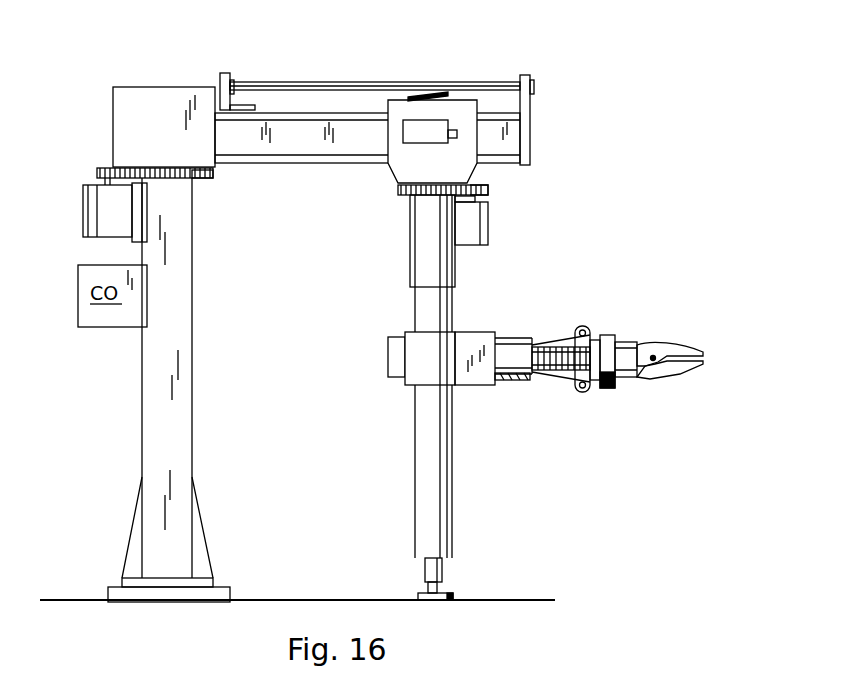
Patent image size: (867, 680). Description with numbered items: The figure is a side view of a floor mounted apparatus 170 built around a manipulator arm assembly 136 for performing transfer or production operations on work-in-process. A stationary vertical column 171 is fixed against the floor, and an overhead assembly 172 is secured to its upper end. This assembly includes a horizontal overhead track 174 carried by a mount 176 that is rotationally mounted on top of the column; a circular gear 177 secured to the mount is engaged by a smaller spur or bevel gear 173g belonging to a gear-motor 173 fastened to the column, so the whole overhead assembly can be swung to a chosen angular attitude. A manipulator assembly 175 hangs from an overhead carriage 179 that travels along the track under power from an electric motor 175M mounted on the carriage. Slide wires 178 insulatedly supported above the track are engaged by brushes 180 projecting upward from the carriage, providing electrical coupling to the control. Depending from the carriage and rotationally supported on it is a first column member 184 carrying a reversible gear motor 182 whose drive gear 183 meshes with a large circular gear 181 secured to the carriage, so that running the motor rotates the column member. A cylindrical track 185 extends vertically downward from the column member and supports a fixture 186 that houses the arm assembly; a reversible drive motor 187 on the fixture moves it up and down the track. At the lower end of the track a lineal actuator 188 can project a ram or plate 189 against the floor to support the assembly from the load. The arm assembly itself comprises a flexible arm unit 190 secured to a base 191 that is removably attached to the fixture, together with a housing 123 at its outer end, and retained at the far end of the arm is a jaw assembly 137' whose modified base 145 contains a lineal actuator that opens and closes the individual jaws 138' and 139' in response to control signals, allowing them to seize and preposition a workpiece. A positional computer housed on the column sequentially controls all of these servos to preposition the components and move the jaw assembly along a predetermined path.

The floor mounted apparatus 170 is at (548, 92).
The stationary vertical column 171 is at (180, 300).
The overhead assembly 172 is at (287, 83).
The gear-motor 173 is at (100, 208).
The spur or bevel gear 173g is at (97, 173).
The overhead track 174 is at (317, 167).
The manipulator assembly 175 is at (562, 213).
The electric motor 175M is at (447, 120).
The mount 176 is at (164, 127).
The circular gear 177 is at (197, 178).
The slide wires 178 is at (345, 83).
The overhead carriage 179 is at (402, 163).
The brushes 180 is at (427, 95).
The large circular spur or bevel gear 181 is at (403, 195).
The gear motor 182 is at (487, 242).
The drive gear 183 is at (487, 188).
The first column member 184 is at (420, 235).
The cylindrical track 185 is at (425, 297).
The fixture 186 is at (427, 387).
The reversible drive motor 187 is at (392, 362).
The lineal actuator 188 is at (427, 570).
The ram or plate 189 is at (443, 593).
The flexible arm unit 190 is at (565, 372).
The base 191 is at (512, 378).
The arm housing 123 is at (473, 335).
The modified base 145 is at (623, 343).
The manipulator arm assembly 136 is at (597, 391).
The jaw assembly 137' is at (647, 385).
The jaw 138' is at (712, 340).
The jaw 139' is at (700, 385).